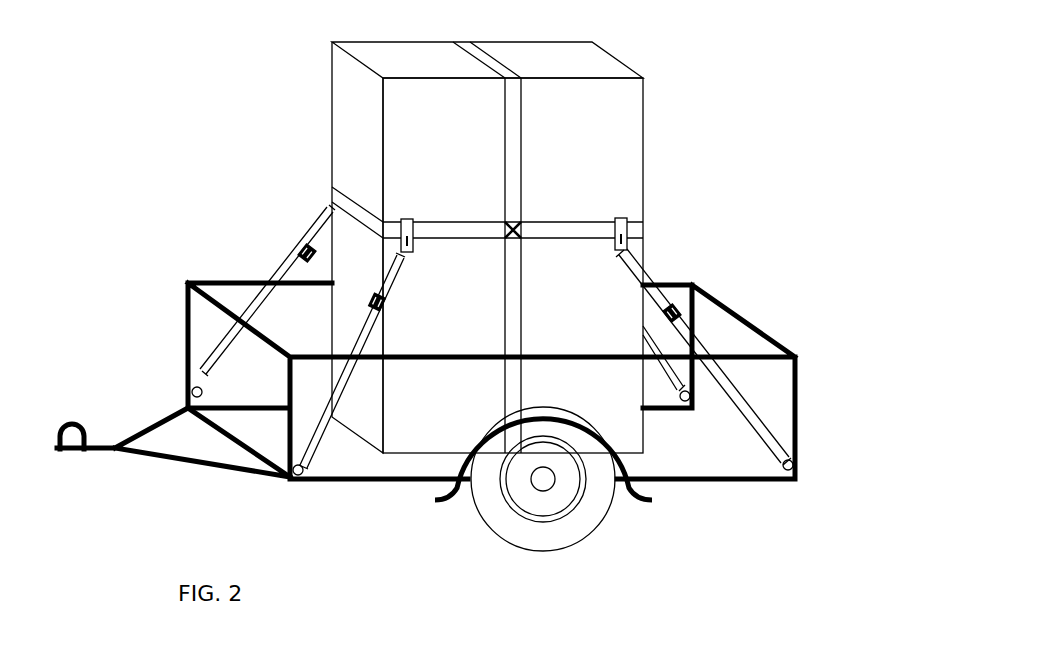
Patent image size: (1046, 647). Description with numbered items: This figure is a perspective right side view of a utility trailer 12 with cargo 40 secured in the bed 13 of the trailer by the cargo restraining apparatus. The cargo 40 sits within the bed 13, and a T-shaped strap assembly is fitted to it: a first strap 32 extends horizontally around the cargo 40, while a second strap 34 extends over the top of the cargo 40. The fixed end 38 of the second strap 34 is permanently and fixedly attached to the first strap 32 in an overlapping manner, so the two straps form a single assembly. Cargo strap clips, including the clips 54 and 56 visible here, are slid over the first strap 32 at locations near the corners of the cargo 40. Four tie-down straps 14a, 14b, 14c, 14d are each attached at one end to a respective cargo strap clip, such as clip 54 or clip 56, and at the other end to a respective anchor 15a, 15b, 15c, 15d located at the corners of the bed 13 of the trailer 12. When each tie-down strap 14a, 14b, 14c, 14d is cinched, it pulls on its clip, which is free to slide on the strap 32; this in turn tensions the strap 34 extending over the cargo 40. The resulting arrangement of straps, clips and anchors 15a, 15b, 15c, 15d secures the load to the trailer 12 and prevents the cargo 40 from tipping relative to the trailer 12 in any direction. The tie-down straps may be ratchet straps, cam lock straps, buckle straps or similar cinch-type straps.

The utility trailer 12 is at (170, 465).
The bed 13 is at (355, 462).
The tie-down strap 14a is at (340, 380).
The tie-down strap 14b is at (290, 268).
The tie-down strap 14c is at (667, 372).
The tie-down strap 14d is at (645, 267).
The anchor 15a is at (202, 395).
The anchor 15b is at (300, 480).
The anchor 15c is at (782, 470).
The anchor 15d is at (680, 408).
The first strap 32 is at (337, 196).
The second strap 34 is at (514, 152).
The fixed end 38 is at (521, 218).
The cargo 40 is at (585, 63).
The cargo strap clip 54 is at (405, 250).
The cargo strap clip 56 is at (621, 228).